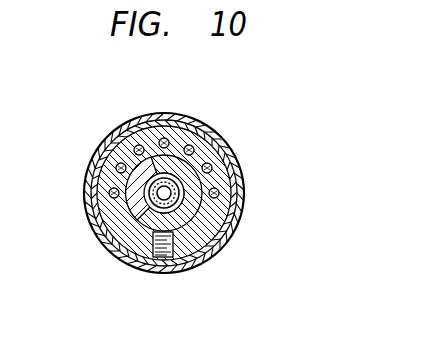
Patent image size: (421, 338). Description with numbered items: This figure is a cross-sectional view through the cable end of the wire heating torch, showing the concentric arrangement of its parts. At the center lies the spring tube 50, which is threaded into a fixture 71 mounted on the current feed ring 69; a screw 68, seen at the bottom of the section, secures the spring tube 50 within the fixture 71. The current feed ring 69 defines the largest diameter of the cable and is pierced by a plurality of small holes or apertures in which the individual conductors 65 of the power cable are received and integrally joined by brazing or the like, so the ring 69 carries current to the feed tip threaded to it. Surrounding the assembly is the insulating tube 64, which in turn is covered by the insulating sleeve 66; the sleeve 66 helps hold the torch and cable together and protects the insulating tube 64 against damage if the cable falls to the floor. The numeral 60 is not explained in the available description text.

The spring tube 50 is at (130, 182).
The inner race ring 60 is at (143, 125).
The insulating tube 64 is at (228, 234).
The conductors 65 is at (198, 131).
The insulating sleeve 66 is at (240, 193).
The screw 68 is at (156, 262).
The current feed ring 69 is at (207, 265).
The fixture 71 is at (128, 222).